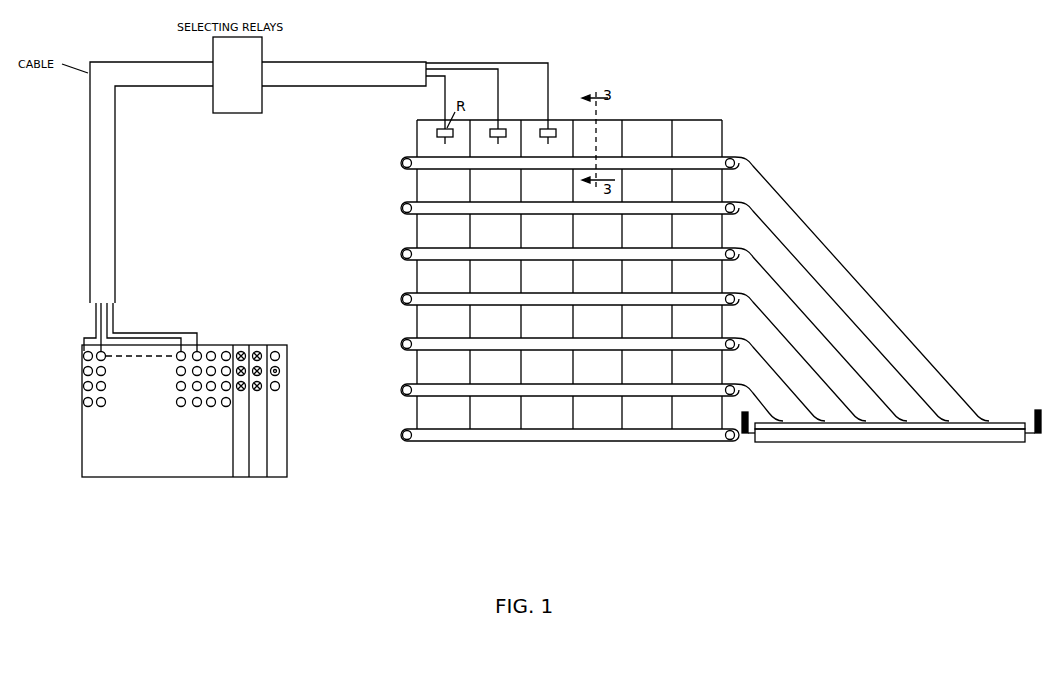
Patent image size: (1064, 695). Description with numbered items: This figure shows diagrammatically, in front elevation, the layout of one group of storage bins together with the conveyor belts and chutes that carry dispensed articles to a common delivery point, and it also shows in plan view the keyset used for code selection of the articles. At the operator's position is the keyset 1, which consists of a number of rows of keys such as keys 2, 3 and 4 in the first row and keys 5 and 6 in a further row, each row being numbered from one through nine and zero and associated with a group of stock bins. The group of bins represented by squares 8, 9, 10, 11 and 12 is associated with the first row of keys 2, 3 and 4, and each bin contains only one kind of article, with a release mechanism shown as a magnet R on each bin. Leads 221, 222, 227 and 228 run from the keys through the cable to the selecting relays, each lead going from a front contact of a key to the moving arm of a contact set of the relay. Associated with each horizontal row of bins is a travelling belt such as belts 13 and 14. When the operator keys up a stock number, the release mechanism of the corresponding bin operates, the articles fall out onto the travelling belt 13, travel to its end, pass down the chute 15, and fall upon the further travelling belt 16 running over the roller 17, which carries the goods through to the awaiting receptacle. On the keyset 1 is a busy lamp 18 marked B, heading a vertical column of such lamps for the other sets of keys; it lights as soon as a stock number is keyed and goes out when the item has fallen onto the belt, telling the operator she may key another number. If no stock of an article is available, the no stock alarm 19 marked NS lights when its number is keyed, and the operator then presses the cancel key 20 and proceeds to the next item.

The keyset 1 is at (82, 450).
The key 2 is at (83, 356).
The key 3 is at (137, 365).
The key 4 is at (224, 350).
The key 5 is at (83, 371).
The key 6 is at (223, 368).
The stock bin 8 is at (422, 138).
The stock bin 9 is at (430, 235).
The stock bin 10 is at (540, 280).
The stock bin 11 is at (493, 325).
The stock bin 12 is at (441, 413).
The travelling belt 13 is at (737, 158).
The travelling belt 14 is at (733, 204).
The chute 15 is at (832, 258).
The travelling belt 16 is at (994, 422).
The roller 17 is at (905, 441).
The busy lamp 18 is at (229, 343).
The no stock alarm 19 is at (268, 350).
The cancel key 20 is at (279, 359).
The lead 221 is at (96, 320).
The lead 222 is at (101, 304).
The lead 227 is at (125, 333).
The lead 228 is at (160, 333).